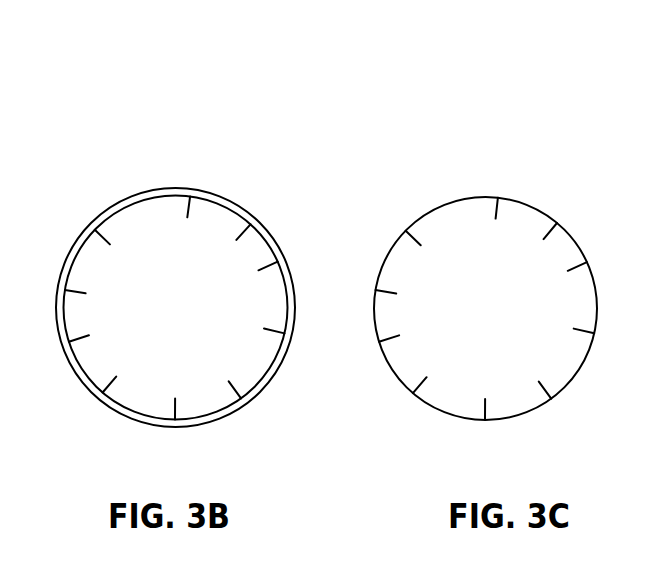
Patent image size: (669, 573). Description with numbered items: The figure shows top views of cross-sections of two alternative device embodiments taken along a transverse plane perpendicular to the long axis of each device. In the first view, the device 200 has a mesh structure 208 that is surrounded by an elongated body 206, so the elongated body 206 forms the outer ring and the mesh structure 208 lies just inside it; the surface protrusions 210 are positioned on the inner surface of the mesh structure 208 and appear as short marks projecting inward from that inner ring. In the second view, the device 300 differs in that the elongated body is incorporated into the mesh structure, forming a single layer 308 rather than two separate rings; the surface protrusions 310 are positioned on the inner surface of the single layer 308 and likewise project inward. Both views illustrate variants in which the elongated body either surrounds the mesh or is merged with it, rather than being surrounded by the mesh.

In FIG. 3B, the device 200 is at (65, 104).
In FIG. 3B, the elongated body 206 is at (213, 193).
In FIG. 3B, the mesh structure 208 is at (147, 199).
In FIG. 3B, the surface protrusions 210 is at (239, 233).
In FIG. 3C, the device 300 is at (400, 108).
In FIG. 3C, the single layer 308 is at (458, 200).
In FIG. 3C, the surface protrusions 310 is at (497, 205).